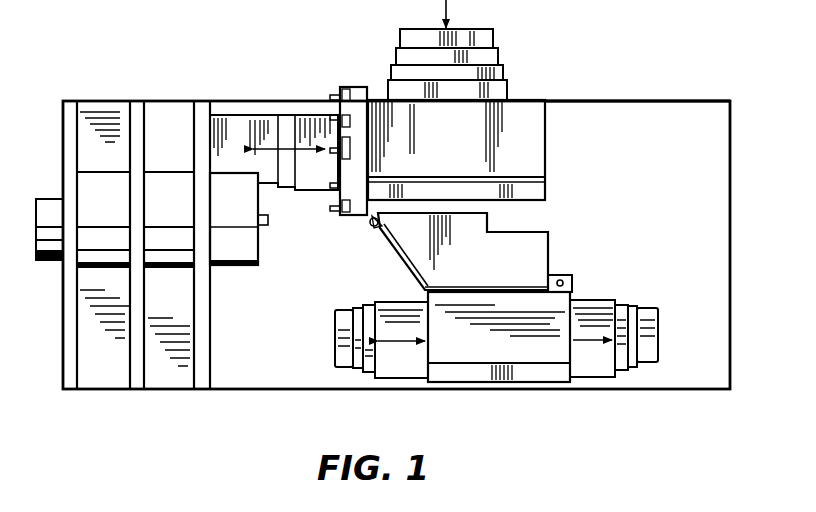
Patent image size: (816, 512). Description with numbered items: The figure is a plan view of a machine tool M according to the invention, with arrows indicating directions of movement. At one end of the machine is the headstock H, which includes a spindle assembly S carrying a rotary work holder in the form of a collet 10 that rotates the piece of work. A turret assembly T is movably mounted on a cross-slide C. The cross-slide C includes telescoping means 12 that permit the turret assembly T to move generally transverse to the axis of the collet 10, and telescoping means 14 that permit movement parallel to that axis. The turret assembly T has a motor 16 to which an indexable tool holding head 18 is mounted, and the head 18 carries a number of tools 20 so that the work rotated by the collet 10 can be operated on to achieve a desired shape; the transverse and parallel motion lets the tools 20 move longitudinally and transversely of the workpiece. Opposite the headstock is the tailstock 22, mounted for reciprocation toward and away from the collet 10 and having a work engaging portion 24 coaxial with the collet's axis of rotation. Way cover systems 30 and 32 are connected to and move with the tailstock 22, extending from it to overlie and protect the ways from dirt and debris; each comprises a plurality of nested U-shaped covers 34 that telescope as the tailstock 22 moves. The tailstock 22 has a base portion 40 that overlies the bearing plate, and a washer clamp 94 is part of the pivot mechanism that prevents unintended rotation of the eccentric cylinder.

The collet 10 is at (270, 222).
The telescoping means 12 is at (506, 90).
The telescoping means 14 is at (300, 130).
The motor 16 is at (545, 140).
The indexable tool holding head 18 is at (368, 150).
The tools 20 is at (335, 97).
The tailstock 22 is at (548, 250).
The work engaging portion 24 is at (370, 226).
The way cover system 30 is at (322, 308).
The way cover system 32 is at (618, 290).
The U-shaped covers 34 is at (597, 365).
The base portion 40 is at (494, 352).
The washer clamp 94 is at (575, 283).
The turret assembly T is at (370, 72).
The cross-slide C is at (512, 55).
The machine tool M is at (657, 92).
The spindle assembly S is at (227, 268).
The headstock H is at (205, 345).